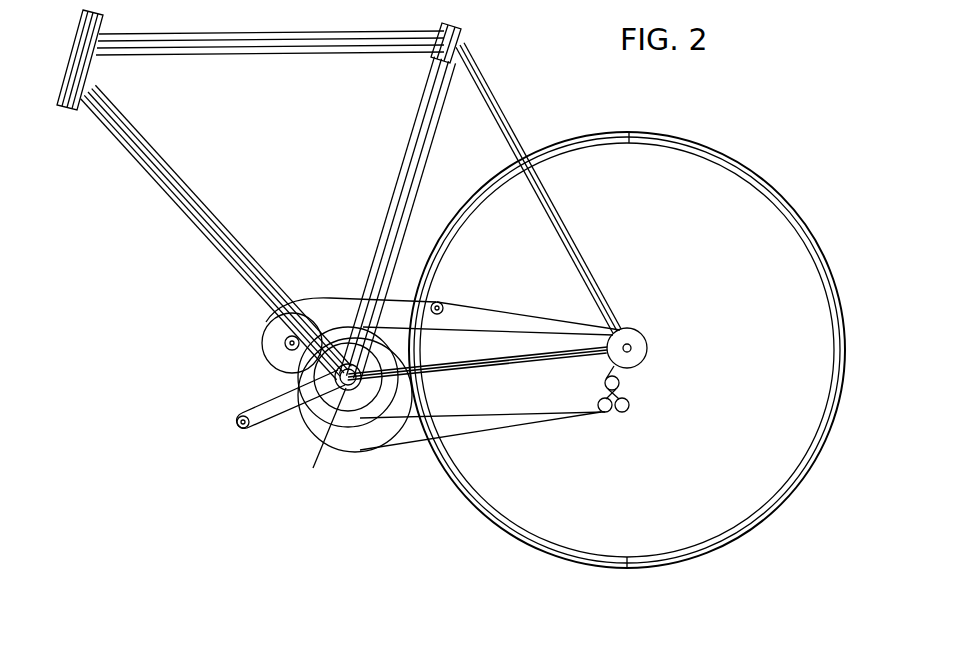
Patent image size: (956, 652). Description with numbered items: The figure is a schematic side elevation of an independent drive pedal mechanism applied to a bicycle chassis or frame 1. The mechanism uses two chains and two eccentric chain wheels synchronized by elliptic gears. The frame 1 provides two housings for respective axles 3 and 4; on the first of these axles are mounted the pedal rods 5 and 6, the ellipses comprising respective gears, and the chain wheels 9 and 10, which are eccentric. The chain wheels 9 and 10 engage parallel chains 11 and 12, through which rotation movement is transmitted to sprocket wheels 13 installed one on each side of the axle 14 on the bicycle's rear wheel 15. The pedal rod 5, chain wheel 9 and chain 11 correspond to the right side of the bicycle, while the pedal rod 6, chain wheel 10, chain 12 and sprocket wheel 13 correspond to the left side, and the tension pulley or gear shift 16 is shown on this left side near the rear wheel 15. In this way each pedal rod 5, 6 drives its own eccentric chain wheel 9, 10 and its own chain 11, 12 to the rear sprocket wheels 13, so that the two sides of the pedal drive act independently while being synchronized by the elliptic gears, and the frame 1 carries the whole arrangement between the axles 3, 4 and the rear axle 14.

The chassis or frame 1 is at (418, 157).
The axle 3 is at (328, 442).
The axle 4 is at (285, 346).
The pedal rod 5 is at (266, 423).
The pedal rod 6 is at (364, 302).
The chain wheel 9 is at (322, 300).
The chain wheel 10 is at (403, 440).
The chain 11 is at (478, 418).
The chain 12 is at (546, 422).
The sprocket wheel 13 is at (647, 349).
The axle 14 is at (636, 330).
The rear wheel 15 is at (787, 488).
The tension pulley or gear shift 16 is at (620, 412).